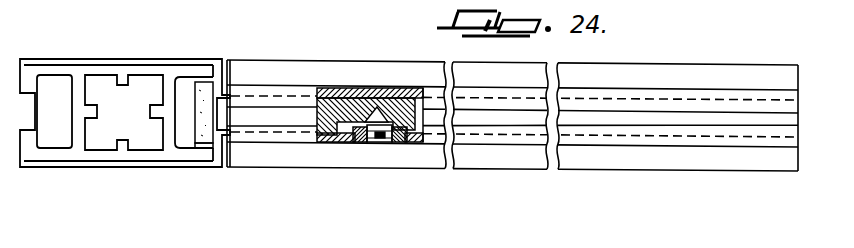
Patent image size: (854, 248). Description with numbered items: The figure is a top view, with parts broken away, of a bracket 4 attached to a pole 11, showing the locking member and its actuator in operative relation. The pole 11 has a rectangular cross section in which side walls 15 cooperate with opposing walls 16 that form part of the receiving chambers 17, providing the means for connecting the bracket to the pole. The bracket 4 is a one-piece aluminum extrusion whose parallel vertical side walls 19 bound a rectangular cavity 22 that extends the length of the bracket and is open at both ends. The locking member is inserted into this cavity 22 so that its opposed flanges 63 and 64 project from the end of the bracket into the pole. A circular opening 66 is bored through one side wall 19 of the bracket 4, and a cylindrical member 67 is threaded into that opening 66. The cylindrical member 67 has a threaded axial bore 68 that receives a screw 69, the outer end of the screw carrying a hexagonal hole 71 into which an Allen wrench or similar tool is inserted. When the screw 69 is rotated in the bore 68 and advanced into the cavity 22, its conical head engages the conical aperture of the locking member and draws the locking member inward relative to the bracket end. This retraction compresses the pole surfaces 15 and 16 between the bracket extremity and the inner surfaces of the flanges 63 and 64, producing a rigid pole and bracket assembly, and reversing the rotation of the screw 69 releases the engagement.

The bracket 4 is at (711, 46).
The pole 11 is at (92, 60).
The side walls 15 is at (232, 77).
The opposing walls 16 is at (206, 148).
The receiving chambers 17 is at (186, 88).
The side walls 19 is at (680, 145).
The cavity 22 is at (416, 88).
The flange 63 is at (200, 145).
The flange 64 is at (210, 82).
The circular opening 66 is at (408, 143).
The cylindrical member 67 is at (358, 143).
The axial bore 68 is at (372, 143).
The screw 69 is at (384, 143).
The hexagonal hole 71 is at (380, 143).